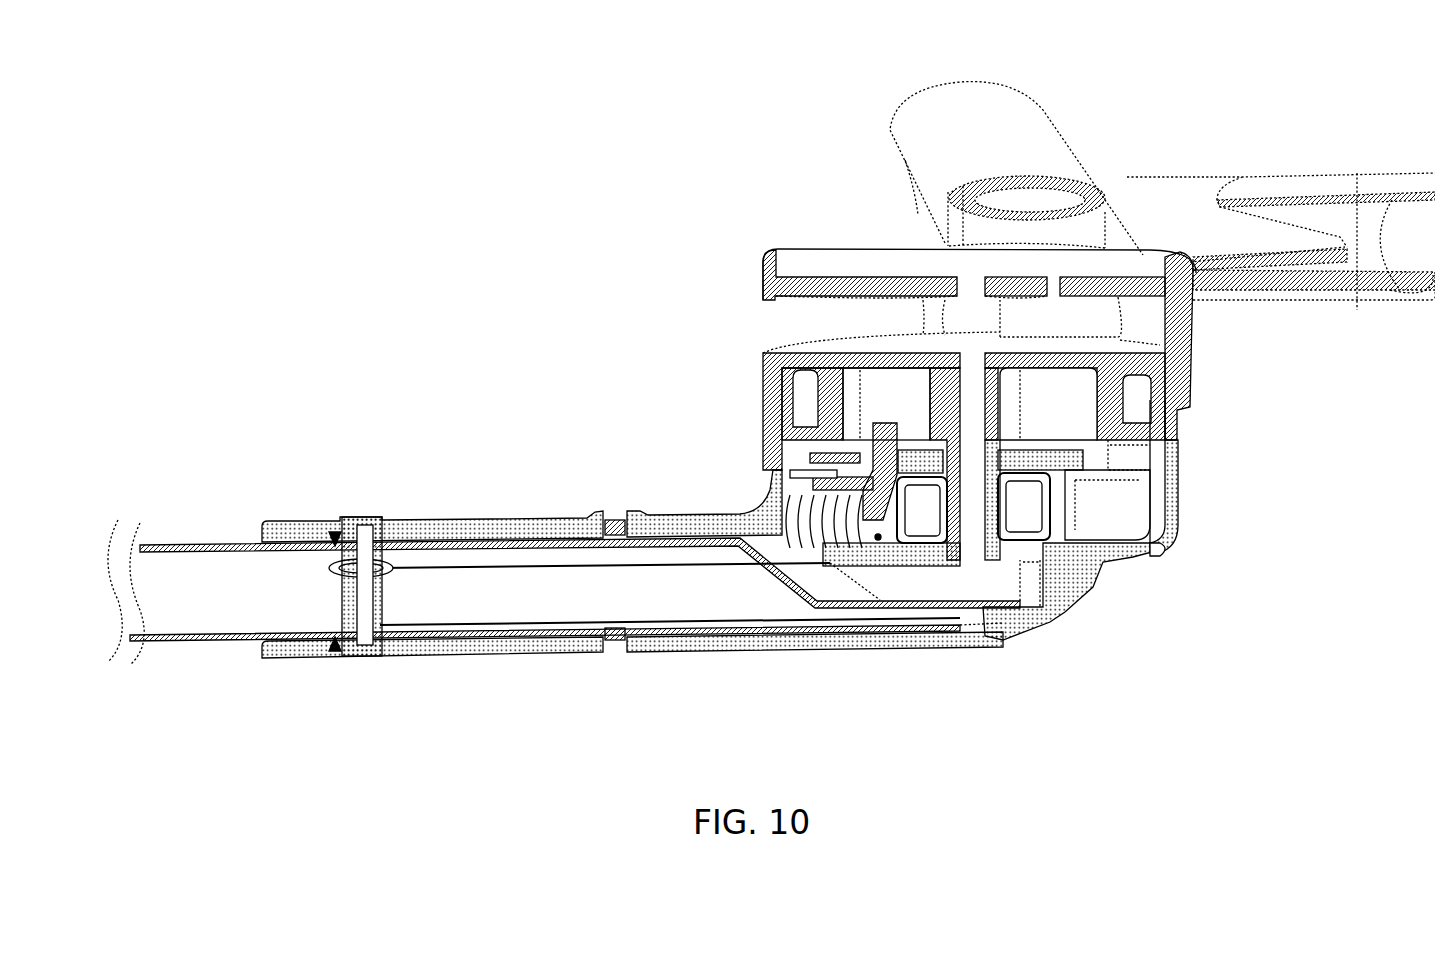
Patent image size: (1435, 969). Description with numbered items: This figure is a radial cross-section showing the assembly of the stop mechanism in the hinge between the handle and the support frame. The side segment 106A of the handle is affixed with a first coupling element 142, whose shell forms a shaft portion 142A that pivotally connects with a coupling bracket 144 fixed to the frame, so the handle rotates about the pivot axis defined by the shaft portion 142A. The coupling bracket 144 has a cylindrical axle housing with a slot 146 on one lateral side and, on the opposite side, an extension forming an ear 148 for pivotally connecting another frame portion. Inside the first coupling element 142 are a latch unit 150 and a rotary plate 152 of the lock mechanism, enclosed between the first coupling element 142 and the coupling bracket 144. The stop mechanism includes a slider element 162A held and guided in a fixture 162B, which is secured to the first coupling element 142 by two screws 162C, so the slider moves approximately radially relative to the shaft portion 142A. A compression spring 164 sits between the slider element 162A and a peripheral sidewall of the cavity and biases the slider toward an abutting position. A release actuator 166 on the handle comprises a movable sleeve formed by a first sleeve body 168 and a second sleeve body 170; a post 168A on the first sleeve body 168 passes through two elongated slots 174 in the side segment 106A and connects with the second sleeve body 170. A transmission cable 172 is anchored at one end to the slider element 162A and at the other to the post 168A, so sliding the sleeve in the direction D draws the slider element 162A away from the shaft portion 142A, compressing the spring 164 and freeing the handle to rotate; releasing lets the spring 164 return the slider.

The side segment 106A is at (177, 648).
The first coupling element 142 is at (1075, 580).
The shaft portion 142A is at (1152, 552).
The coupling bracket 144 is at (1097, 203).
The slot 146 is at (770, 322).
The ear 148 is at (1283, 185).
The latch unit 150 is at (1077, 497).
The rotary plate 152 is at (1117, 455).
The slider element 162A is at (788, 436).
The fixture 162B is at (778, 473).
The screws 162C is at (788, 449).
The spring 164 is at (787, 493).
The release actuator 166 is at (447, 450).
The first sleeve body 168 is at (403, 660).
The post 168A is at (345, 590).
The second sleeve body 170 is at (420, 515).
The transmission cable 172 is at (545, 562).
The elongated slots 174 is at (336, 520).